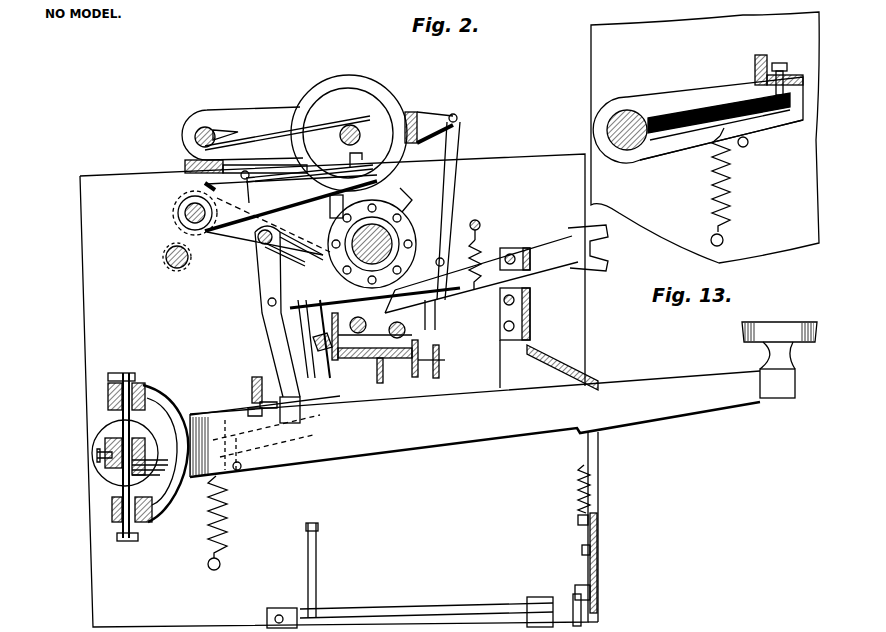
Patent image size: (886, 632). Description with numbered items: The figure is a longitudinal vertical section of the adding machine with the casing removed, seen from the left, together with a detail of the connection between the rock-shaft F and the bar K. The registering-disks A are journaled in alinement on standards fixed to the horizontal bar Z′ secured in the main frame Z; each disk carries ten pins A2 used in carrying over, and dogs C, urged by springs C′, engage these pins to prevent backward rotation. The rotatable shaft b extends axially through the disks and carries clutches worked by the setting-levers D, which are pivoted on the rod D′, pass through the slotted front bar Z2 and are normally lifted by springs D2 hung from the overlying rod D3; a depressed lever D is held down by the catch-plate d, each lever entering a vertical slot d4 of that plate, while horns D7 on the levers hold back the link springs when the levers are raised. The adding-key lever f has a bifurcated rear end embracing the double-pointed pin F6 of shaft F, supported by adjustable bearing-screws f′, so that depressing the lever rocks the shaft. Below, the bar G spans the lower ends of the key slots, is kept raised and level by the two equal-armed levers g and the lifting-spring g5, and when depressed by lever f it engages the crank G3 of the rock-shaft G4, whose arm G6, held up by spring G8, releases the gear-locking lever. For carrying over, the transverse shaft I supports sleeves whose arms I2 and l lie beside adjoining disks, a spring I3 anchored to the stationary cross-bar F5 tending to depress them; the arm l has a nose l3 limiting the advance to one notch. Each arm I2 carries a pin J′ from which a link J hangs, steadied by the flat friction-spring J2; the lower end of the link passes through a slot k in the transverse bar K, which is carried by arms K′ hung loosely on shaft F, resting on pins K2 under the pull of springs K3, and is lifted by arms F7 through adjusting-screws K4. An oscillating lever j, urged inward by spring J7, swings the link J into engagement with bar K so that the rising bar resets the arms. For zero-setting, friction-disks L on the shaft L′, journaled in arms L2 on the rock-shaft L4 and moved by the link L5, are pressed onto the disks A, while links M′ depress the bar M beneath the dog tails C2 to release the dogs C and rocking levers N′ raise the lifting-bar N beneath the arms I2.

In FIG. 2, the friction-disks L is at (330, 75).
In FIG. 2, the common shaft L′ is at (370, 120).
In FIG. 2, the arms L2 is at (300, 112).
In FIG. 2, the rock-shaft L4 is at (195, 137).
In FIG. 2, the link L5 is at (255, 140).
In FIG. 2, the links M′ is at (465, 140).
In FIG. 2, the arm l is at (307, 184).
In FIG. 2, the nose l3 is at (410, 194).
In FIG. 2, the transverse shaft I is at (185, 213).
In FIG. 2, the arm I2 is at (310, 200).
In FIG. 2, the spring I3 is at (168, 252).
In FIG. 2, the stationary cross-bar F5 is at (166, 265).
In FIG. 2, the pin J′ is at (240, 252).
In FIG. 2, the lifting-bar N is at (262, 250).
In FIG. 2, the rocking levers N′ is at (300, 292).
In FIG. 2, the flat friction-spring J2 is at (268, 300).
In FIG. 2, the link J is at (262, 338).
In FIG. 2, the oscillating lever j is at (302, 339).
In FIG. 2, the horns D7 is at (307, 347).
In FIG. 2, the spring J7 is at (325, 348).
In FIG. 2, the shaft or rod D′ is at (375, 354).
In FIG. 2, the horizontal bar Z′ is at (626, 490).
In FIG. 2, the bar M is at (434, 369).
In FIG. 2, the registering-disks A is at (403, 218).
In FIG. 2, the pins A2 is at (404, 222).
In FIG. 2, the rotatable shaft b is at (365, 240).
In FIG. 2, the dogs C is at (481, 274).
In FIG. 2, the springs C′ is at (438, 307).
In FIG. 2, the overlying rod D3 is at (480, 222).
In FIG. 2, the spring D2 is at (485, 250).
In FIG. 2, the slotted front bar Z2 is at (571, 247).
In FIG. 2, the setting-lever D is at (498, 322).
In FIG. 2, the vertical slot d4 is at (532, 308).
In FIG. 2, the tails C2 is at (440, 326).
In FIG. 2, the catch-plate d is at (552, 367).
In FIG. 2, the adjustable bearing-screws f′ is at (126, 370).
In FIG. 2, the arm F7 is at (160, 420).
In FIG. 13, the arm F7 is at (697, 117).
In FIG. 2, the transverse bar K is at (252, 385).
In FIG. 13, the transverse bar K is at (760, 55).
In FIG. 2, the adjusting-screws K4 is at (248, 412).
In FIG. 13, the adjusting-screws K4 is at (781, 62).
In FIG. 2, the rock-shaft F is at (100, 440).
In FIG. 13, the rock-shaft F is at (623, 110).
In FIG. 2, the double-pointed pin F6 is at (110, 478).
In FIG. 2, the spring K3 is at (208, 510).
In FIG. 13, the spring K3 is at (704, 187).
In FIG. 2, the slot k is at (317, 413).
In FIG. 2, the pins K2 is at (240, 470).
In FIG. 13, the pins K2 is at (750, 144).
In FIG. 2, the arms K′ is at (290, 458).
In FIG. 13, the arms K′ is at (668, 150).
In FIG. 2, the spring G8 is at (300, 605).
In FIG. 2, the arm G6 is at (318, 565).
In FIG. 2, the rock-shaft G4 is at (440, 604).
In FIG. 2, the crank G3 is at (600, 598).
In FIG. 2, the lifting-spring g5 is at (564, 489).
In FIG. 2, the equal-armed levers g is at (580, 528).
In FIG. 2, the bar G is at (578, 563).
In FIG. 2, the adding-key lever f is at (737, 402).
In FIG. 13, the main frame Z is at (767, 195).